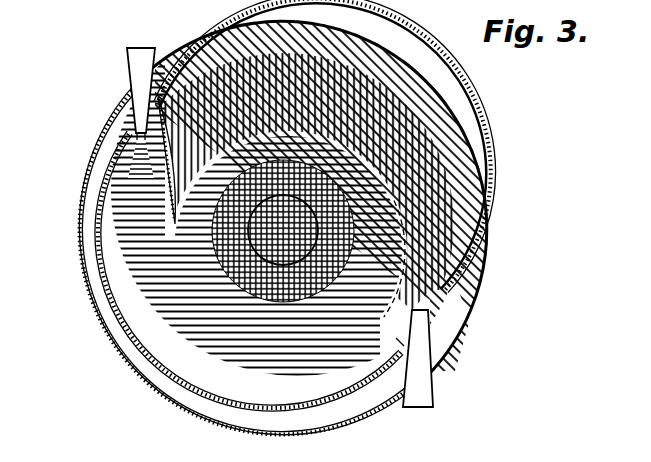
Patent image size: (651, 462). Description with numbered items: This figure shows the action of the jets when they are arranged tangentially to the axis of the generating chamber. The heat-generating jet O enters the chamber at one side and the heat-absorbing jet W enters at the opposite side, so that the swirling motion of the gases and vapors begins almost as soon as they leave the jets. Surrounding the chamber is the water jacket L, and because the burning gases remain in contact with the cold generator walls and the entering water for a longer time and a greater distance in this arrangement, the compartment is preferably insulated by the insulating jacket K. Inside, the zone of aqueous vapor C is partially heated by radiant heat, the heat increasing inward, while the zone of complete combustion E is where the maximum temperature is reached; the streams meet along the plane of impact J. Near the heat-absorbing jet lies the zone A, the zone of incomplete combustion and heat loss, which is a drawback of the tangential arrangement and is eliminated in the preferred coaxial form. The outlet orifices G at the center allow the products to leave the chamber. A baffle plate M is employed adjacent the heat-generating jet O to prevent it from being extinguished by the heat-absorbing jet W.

The insulating jacket K is at (325, 231).
The baffle plate M is at (176, 47).
The zone of aqueous vapor C is at (325, 231).
The zone of complete combustion E is at (325, 231).
The water jacket L is at (97, 220).
The outlet orifices G is at (283, 230).
The drum H is at (283, 231).
The plane of impact J is at (399, 259).
The zone of incomplete combustion A is at (387, 335).
The heat-generating jet O is at (141, 95).
The heat-absorbing jet W is at (415, 378).